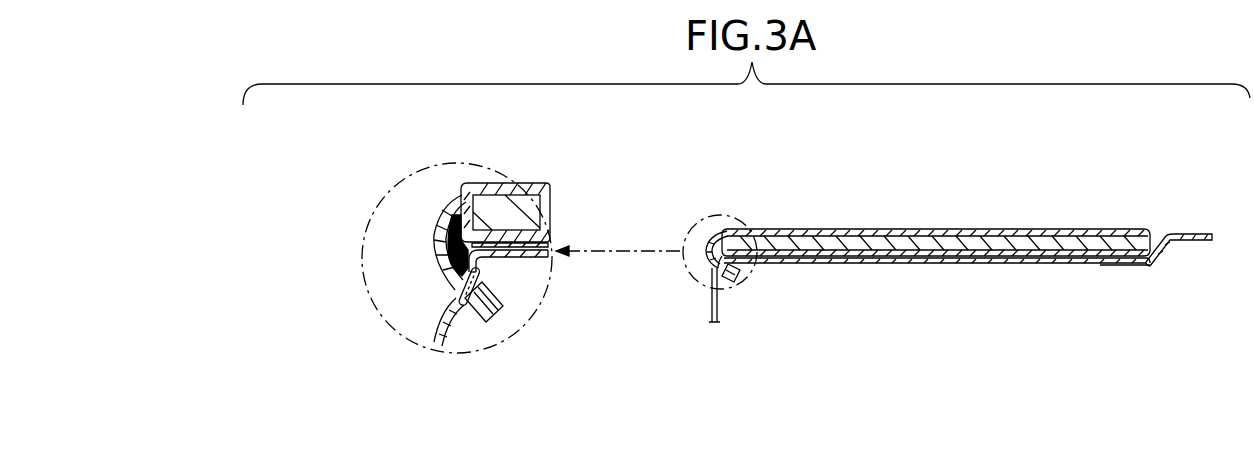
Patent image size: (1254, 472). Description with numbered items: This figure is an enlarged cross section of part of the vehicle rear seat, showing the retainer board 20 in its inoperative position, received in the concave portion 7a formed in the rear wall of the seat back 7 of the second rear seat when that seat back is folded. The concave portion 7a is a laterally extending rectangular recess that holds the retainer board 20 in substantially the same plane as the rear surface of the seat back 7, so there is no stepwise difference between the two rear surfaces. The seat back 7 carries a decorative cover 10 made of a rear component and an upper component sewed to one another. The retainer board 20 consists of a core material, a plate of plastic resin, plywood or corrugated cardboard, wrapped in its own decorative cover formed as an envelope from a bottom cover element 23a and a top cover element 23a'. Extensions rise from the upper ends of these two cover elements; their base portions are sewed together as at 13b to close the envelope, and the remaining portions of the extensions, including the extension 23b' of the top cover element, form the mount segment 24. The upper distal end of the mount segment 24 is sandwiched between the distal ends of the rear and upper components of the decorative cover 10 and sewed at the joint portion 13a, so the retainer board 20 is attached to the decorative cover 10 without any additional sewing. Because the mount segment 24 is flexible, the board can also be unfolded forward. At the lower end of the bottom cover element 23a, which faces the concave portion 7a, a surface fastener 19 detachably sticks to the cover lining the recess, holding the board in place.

The seat back 7 is at (1183, 212).
The concave portion 7a is at (1150, 242).
The decorative cover 10 is at (749, 310).
The joint portion 13a is at (463, 318).
The sewn base portions 13b is at (452, 168).
The surface fastener 19 is at (1122, 268).
The retainer board 20 is at (936, 198).
The bottom cover element 23a is at (555, 218).
The top cover element 23a' is at (556, 169).
The extension 23b' is at (382, 242).
The mount segment 24 is at (362, 222).